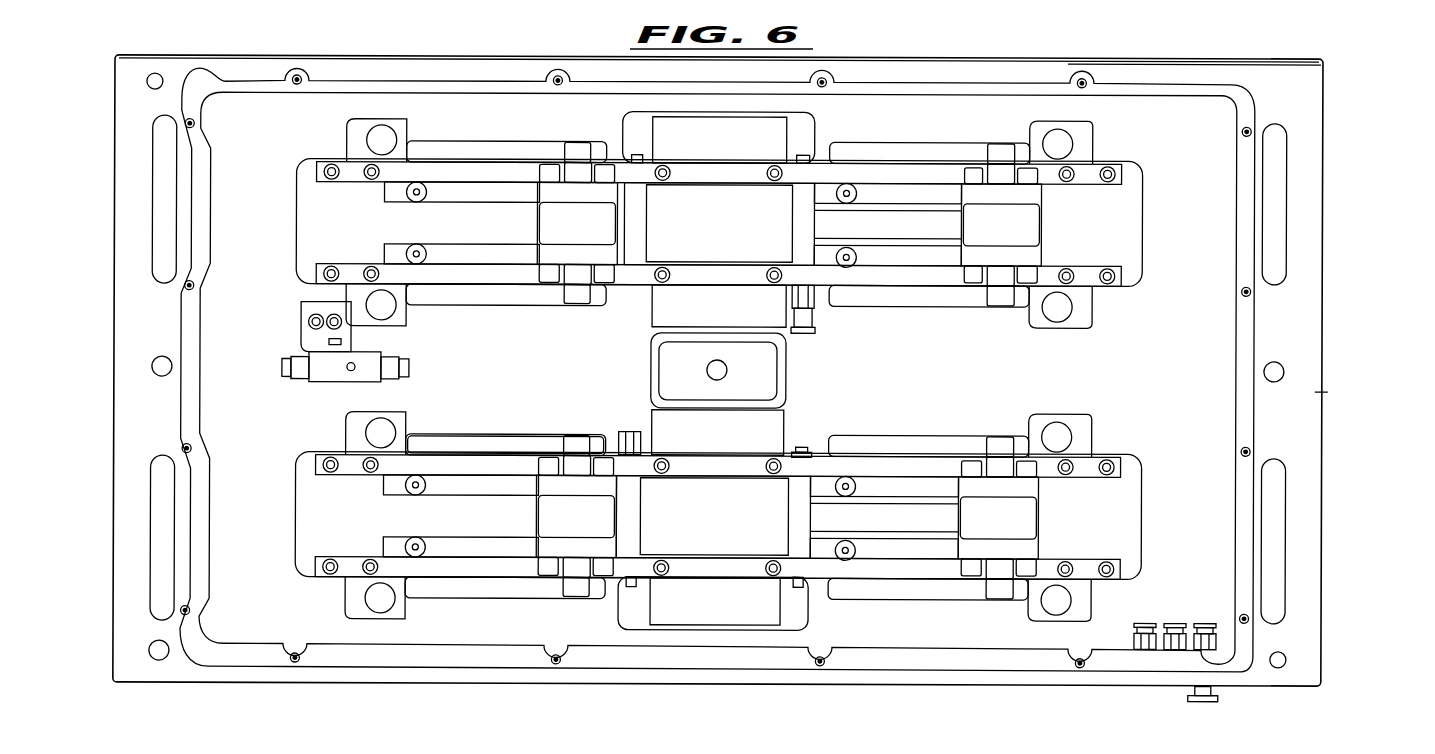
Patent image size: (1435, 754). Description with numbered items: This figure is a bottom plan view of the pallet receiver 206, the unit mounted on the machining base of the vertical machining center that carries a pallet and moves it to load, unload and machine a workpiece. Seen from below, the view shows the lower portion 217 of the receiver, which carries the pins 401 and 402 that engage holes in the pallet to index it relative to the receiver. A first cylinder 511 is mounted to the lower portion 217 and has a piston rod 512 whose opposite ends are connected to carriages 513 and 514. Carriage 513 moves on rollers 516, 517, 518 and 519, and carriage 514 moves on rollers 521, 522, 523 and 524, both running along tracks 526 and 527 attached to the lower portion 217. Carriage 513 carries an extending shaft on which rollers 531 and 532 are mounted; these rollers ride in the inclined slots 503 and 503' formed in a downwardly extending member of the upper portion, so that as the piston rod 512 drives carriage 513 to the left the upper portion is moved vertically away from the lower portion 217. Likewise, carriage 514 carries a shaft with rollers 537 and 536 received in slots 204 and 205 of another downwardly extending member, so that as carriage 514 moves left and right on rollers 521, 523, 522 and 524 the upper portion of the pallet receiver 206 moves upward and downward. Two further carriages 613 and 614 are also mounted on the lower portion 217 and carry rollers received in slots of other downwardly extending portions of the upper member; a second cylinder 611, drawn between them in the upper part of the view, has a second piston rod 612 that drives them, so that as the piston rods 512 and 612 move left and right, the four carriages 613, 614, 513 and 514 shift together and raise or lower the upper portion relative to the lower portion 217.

The pallet receiver 206 is at (1340, 428).
The pin 401 is at (371, 331).
The pin 402 is at (1193, 334).
The lower portion 217 is at (717, 336).
The inclined slot 503 is at (480, 299).
The inclined slot 503' is at (506, 390).
The carriage 613 is at (578, 222).
The center cylinder block 611 is at (753, 218).
The piston rod 612 is at (915, 223).
The carriage 614 is at (1002, 232).
The slot 205 is at (928, 445).
The slot 204 is at (853, 593).
The track 526 is at (462, 467).
The track 527 is at (453, 568).
The carriage 513 is at (557, 488).
The roller 516 is at (547, 462).
The roller 518 is at (605, 470).
The roller 532 is at (575, 448).
The roller 517 is at (542, 568).
The roller 519 is at (605, 570).
The roller 531 is at (573, 590).
The first cylinder 511 is at (738, 520).
The piston rod 512 is at (873, 517).
The carriage 514 is at (1028, 518).
The roller 521 is at (965, 470).
The roller 523 is at (1030, 463).
The roller 536 is at (995, 443).
The roller 522 is at (975, 568).
The roller 537 is at (997, 593).
The roller 524 is at (1025, 593).